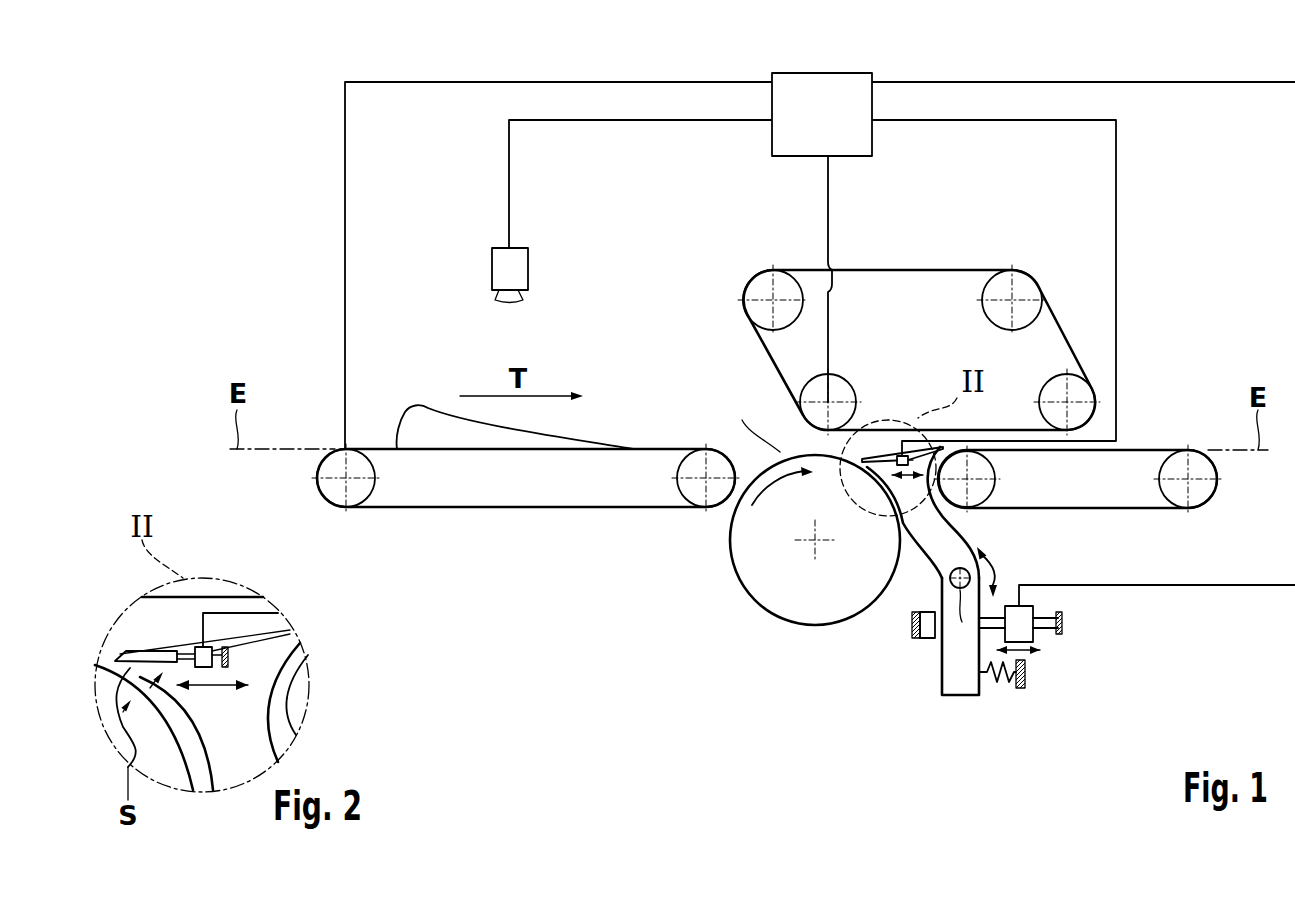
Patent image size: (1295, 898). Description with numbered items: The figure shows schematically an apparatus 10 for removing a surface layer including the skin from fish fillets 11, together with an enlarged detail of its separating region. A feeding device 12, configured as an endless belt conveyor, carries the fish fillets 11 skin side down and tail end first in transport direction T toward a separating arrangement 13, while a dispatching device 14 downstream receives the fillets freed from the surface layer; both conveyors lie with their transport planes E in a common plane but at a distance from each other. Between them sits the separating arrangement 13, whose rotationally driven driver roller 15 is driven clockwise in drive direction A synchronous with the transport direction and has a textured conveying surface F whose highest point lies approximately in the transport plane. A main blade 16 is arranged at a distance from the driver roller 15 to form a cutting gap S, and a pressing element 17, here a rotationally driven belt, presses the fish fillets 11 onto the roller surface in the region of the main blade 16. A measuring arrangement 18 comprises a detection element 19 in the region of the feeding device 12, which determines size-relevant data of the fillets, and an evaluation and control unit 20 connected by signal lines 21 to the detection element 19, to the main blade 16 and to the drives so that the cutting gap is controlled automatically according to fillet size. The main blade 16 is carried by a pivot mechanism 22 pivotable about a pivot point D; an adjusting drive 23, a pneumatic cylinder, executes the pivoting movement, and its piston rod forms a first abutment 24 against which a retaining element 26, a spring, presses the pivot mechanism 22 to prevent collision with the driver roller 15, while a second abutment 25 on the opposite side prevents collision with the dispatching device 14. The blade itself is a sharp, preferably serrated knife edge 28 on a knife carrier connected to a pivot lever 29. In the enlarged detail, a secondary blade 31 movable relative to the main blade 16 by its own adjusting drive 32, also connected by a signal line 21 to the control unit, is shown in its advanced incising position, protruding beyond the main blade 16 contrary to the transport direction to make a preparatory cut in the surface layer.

In FIG. 1, the apparatus 10 is at (509, 672).
In FIG. 1, the fish fillets 11 is at (418, 412).
In FIG. 1, the feeding device 12 is at (487, 527).
In FIG. 1, the separating arrangement 13 is at (772, 657).
In FIG. 1, the dispatching device 14 is at (1146, 429).
In FIG. 1, the driver roller 15 is at (752, 575).
In FIG. 1, the main blade 16 is at (867, 476).
In FIG. 2, the main blade 16 is at (130, 715).
In FIG. 1, the pressing element 17 is at (936, 252).
In FIG. 1, the measuring arrangement 18 is at (924, 57).
In FIG. 1, the detection element 19 is at (530, 270).
In FIG. 1, the evaluation and control unit 20 is at (820, 79).
In FIG. 1, the signal lines 21 is at (497, 82).
In FIG. 2, the signal lines 21 is at (243, 610).
In FIG. 1, the pivot mechanism 22 is at (932, 695).
In FIG. 1, the adjusting drive 23 is at (1034, 614).
In FIG. 1, the first abutment 24 is at (995, 612).
In FIG. 1, the abutment 25 is at (928, 640).
In FIG. 1, the retaining element 26 is at (1020, 690).
In FIG. 2, the knife edge 28 is at (93, 699).
In FIG. 1, the pivot lever 29 is at (930, 548).
In FIG. 2, the pivot lever 29 is at (233, 756).
In FIG. 1, the secondary blade 31 is at (888, 457).
In FIG. 2, the secondary blade 31 is at (130, 645).
In FIG. 1, the adjusting drive 32 is at (968, 468).
In FIG. 2, the adjusting drive 32 is at (262, 645).